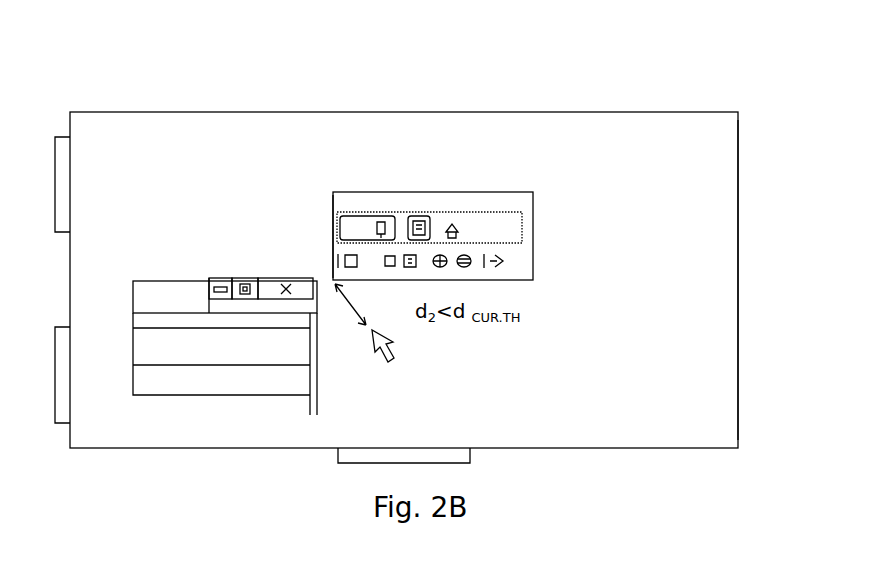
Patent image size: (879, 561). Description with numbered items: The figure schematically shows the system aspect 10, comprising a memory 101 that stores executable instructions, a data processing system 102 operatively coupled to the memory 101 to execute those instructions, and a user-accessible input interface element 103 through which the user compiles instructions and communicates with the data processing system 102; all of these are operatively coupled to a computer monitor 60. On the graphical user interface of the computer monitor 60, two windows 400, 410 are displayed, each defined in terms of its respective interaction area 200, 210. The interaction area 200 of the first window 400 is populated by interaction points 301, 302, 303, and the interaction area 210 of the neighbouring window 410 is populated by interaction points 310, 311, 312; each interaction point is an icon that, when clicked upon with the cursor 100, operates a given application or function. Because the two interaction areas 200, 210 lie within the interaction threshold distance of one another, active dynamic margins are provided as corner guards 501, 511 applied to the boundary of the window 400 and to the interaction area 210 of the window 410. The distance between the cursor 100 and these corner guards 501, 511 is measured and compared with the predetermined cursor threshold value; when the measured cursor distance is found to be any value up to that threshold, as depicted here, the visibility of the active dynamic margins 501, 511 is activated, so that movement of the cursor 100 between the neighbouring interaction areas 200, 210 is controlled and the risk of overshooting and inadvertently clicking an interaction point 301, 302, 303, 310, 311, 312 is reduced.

The system aspect 10 is at (704, 92).
The computer monitor 60 is at (738, 288).
The memory 101 is at (62, 212).
The data processing system 102 is at (62, 402).
The user input interface element 103 is at (468, 462).
The interaction area 200 is at (209, 313).
The interaction point 301 is at (285, 278).
The interaction point 302 is at (245, 278).
The interaction point 303 is at (213, 289).
The window 400 is at (163, 388).
The corner guard 501 is at (318, 302).
The corner guard 511 is at (331, 228).
The interaction area 210 is at (532, 272).
The interaction point 310 is at (362, 218).
The interaction point 311 is at (429, 225).
The interaction point 312 is at (510, 215).
The window 410 is at (535, 244).
The cursor 100 is at (405, 364).